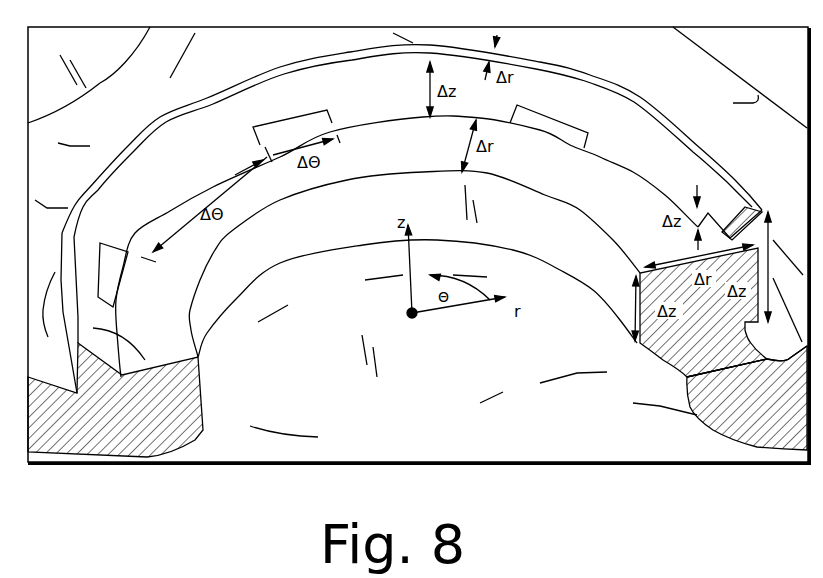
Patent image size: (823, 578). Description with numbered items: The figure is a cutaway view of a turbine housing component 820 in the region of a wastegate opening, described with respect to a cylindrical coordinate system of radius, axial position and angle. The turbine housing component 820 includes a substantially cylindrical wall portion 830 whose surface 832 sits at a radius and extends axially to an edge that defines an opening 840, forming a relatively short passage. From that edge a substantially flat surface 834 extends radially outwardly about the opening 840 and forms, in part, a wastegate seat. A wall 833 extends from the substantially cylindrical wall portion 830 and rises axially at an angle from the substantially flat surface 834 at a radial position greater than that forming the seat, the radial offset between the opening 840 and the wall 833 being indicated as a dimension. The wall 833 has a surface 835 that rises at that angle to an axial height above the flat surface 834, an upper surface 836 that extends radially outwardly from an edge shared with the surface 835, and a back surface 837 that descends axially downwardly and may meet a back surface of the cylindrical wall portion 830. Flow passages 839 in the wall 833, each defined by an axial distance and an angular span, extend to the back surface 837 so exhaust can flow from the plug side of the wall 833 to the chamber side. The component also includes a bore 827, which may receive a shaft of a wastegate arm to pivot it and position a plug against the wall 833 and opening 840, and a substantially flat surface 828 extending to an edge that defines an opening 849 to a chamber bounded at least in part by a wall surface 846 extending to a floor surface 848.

The turbine housing component 820 is at (779, 415).
The bore 827 is at (113, 53).
The substantially flat surface 828 is at (789, 60).
The substantially cylindrical wall portion 830 is at (174, 410).
The surface 832 is at (303, 247).
The wall 833 is at (278, 56).
The substantially flat surface 834 is at (629, 200).
The surface 835 is at (620, 133).
The upper surface 836 is at (648, 105).
The back surface 837 is at (762, 208).
The flow passages 839 is at (297, 118).
The opening 840 is at (615, 238).
The wall surface 846 is at (631, 60).
The floor surface 848 is at (687, 378).
The opening 849 is at (725, 104).